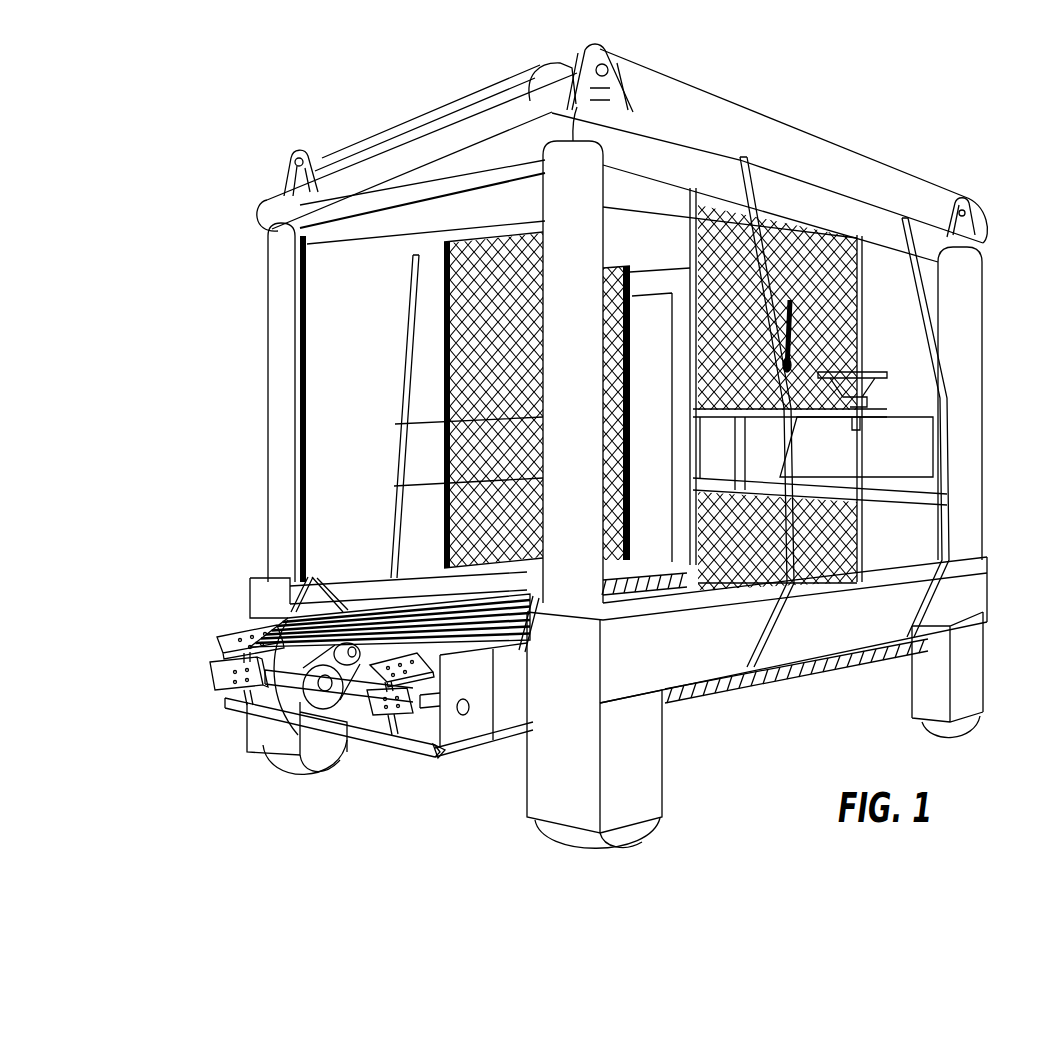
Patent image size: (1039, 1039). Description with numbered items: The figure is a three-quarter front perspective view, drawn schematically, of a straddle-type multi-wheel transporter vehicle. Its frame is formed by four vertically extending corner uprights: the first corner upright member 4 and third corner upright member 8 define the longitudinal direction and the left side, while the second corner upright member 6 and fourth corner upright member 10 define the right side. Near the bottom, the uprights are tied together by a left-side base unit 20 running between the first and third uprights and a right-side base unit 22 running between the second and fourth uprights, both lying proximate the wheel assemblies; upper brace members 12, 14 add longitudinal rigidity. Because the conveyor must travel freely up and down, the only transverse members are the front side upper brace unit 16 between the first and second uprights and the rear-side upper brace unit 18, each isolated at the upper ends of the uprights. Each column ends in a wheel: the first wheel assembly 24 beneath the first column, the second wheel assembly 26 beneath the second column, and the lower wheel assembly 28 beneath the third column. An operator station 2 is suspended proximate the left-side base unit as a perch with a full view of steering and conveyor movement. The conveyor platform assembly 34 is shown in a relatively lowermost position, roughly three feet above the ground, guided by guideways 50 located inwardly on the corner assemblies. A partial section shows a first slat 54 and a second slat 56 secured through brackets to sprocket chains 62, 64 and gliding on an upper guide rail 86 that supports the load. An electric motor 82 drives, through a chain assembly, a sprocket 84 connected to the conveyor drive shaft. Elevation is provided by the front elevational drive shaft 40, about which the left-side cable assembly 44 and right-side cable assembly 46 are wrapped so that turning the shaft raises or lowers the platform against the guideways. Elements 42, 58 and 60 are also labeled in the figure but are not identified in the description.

The operator station 2 is at (856, 447).
The first corner upright member 4 is at (580, 421).
The second corner upright member 6 is at (268, 312).
The third corner upright member 8 is at (972, 353).
The fourth corner upright member 10 is at (673, 387).
The upper brace member 12 is at (688, 150).
The upper brace member 14 is at (373, 254).
The front side upper brace unit 16 is at (493, 140).
The rear-side upper brace unit 18 is at (880, 262).
The left-side base unit 20 is at (823, 629).
The right-side base unit 22 is at (377, 575).
The first wheel assembly 24 is at (617, 781).
The second wheel assembly 26 is at (253, 730).
The lower wheel assembly 28 is at (972, 681).
The conveyor platform assembly 34 is at (463, 724).
The front elevational drive shaft 40 is at (552, 68).
The mesh panel 42 is at (803, 223).
The left-side cable assembly 44 is at (787, 130).
The right-side cable assembly 46 is at (517, 205).
The guideway 50 is at (299, 372).
The first slat 54 is at (237, 634).
The second slat 56 is at (212, 668).
The bracket 58 is at (438, 754).
The wheel 60 is at (283, 728).
The sprocket chain 62 is at (389, 724).
The sprocket chain 64 is at (226, 690).
The electric motor 82 is at (313, 645).
The sprocket 84 is at (330, 692).
The upper guide rail 86 is at (472, 667).